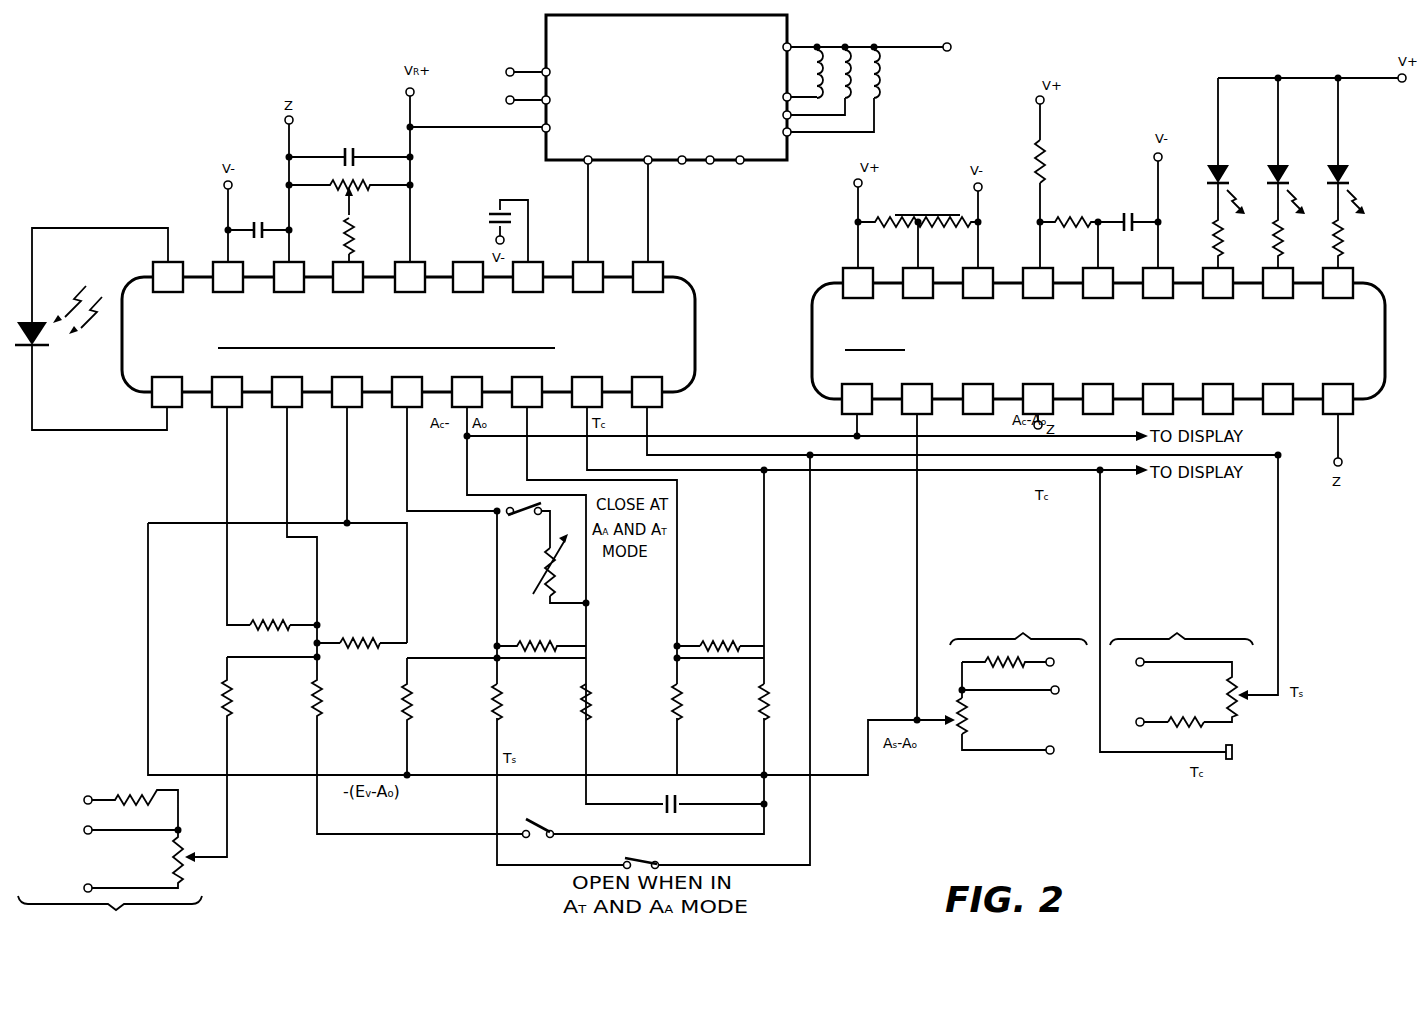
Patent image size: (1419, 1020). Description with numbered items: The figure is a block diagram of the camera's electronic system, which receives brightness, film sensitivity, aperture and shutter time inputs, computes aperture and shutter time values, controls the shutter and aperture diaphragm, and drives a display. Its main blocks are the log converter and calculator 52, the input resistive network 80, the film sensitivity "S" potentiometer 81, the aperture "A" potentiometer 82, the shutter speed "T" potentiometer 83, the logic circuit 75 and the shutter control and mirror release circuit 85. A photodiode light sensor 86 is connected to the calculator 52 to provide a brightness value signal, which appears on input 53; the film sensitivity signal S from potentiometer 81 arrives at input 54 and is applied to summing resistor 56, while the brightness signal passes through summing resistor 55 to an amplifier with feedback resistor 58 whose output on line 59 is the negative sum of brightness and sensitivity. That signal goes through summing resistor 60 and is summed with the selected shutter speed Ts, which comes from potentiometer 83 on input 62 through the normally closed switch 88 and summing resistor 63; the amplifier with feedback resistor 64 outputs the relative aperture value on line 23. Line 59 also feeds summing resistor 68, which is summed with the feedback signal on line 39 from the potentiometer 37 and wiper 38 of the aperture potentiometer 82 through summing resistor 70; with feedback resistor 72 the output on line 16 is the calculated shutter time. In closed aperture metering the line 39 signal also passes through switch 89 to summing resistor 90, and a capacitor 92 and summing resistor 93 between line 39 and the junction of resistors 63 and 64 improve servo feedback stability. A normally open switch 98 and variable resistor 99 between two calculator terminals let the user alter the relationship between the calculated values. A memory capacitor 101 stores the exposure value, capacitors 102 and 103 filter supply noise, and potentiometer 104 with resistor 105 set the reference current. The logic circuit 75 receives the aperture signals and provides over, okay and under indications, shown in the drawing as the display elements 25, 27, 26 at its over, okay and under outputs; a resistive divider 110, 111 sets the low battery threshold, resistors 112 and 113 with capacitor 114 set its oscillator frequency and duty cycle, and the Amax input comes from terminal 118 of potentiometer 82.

The line 16 is at (587, 458).
The line 23 is at (471, 439).
The over LED 25 is at (1230, 159).
The under LED 26 is at (1356, 171).
The OK LED 27 is at (1288, 169).
The potentiometer 37 is at (965, 714).
The wiper 38 is at (925, 714).
The line 39 is at (612, 816).
The log converter and calculator 52 is at (408, 334).
The input 53 is at (227, 442).
The input 54 is at (224, 828).
The summing resistor 55 is at (273, 614).
The summing resistor 56 is at (222, 701).
The feedback resistor 58 is at (367, 637).
The line 59 is at (347, 475).
The summing resistor 60 is at (404, 702).
The input 62 is at (872, 456).
The summing resistor 63 is at (500, 692).
The feedback resistor 64 is at (542, 638).
The summing resistor 68 is at (681, 693).
The summing resistor 70 is at (755, 701).
The feedback resistor 72 is at (722, 641).
The logic circuit 75 is at (1098, 341).
The input resistive network 80 is at (439, 619).
The film sensitivity "S" potentiometer 81 is at (115, 863).
The aperture "A" potentiometer 82 is at (1018, 682).
The shutter speed "T" potentiometer 83 is at (1179, 668).
The shutter control and mirror release circuit 85 is at (546, 27).
The photodiode light sensor 86 is at (43, 317).
The switch 88 is at (646, 861).
The switch 89 is at (548, 797).
The summing resistor 90 is at (317, 704).
The capacitor 92 is at (676, 794).
The summing resistor 93 is at (586, 699).
The switch 98 is at (504, 520).
The variable resistor 99 is at (534, 573).
The memory capacitor 101 is at (487, 222).
The capacitor 102 is at (268, 197).
The capacitor 103 is at (364, 142).
The potentiometer 104 is at (341, 156).
The resistor 105 is at (347, 243).
The resistive divider 110 is at (856, 225).
The resistive divider 111 is at (946, 217).
The resistor 112 is at (1039, 152).
The resistor 113 is at (1079, 214).
The capacitor 114 is at (1133, 210).
The terminal 118 is at (1035, 692).